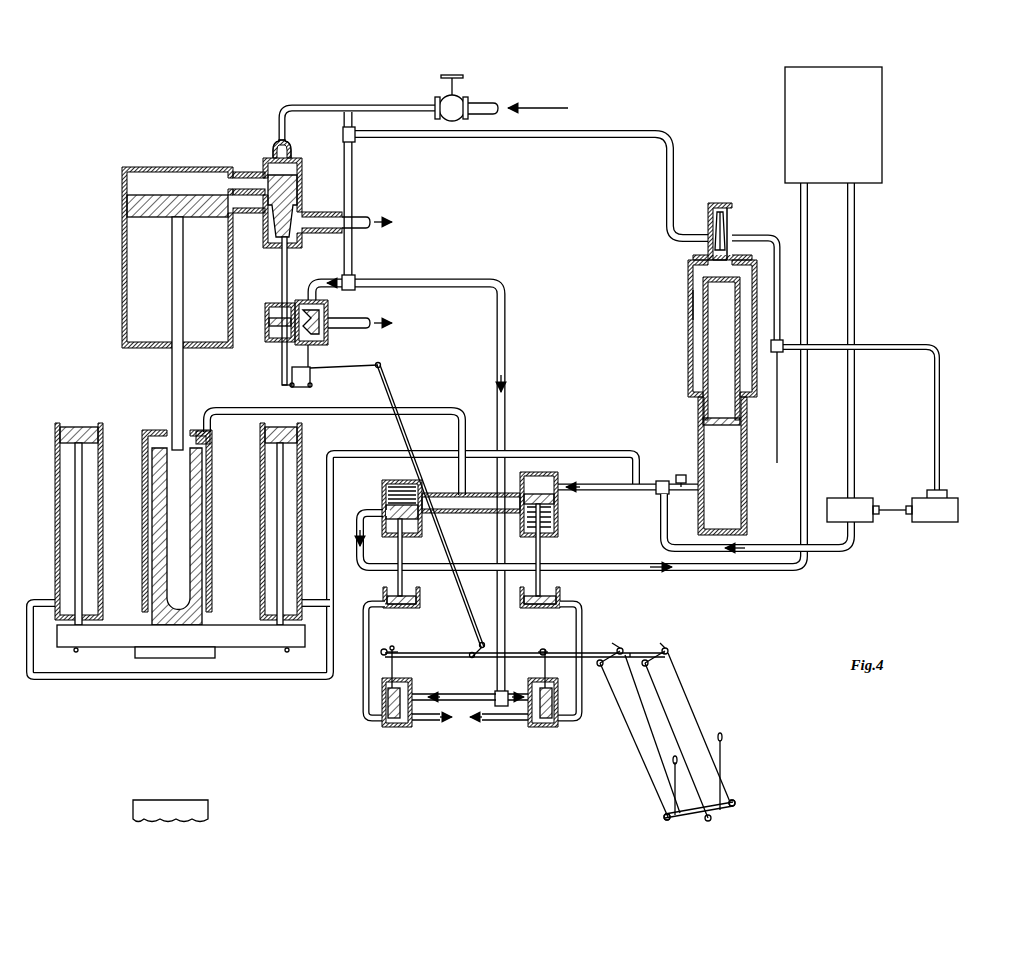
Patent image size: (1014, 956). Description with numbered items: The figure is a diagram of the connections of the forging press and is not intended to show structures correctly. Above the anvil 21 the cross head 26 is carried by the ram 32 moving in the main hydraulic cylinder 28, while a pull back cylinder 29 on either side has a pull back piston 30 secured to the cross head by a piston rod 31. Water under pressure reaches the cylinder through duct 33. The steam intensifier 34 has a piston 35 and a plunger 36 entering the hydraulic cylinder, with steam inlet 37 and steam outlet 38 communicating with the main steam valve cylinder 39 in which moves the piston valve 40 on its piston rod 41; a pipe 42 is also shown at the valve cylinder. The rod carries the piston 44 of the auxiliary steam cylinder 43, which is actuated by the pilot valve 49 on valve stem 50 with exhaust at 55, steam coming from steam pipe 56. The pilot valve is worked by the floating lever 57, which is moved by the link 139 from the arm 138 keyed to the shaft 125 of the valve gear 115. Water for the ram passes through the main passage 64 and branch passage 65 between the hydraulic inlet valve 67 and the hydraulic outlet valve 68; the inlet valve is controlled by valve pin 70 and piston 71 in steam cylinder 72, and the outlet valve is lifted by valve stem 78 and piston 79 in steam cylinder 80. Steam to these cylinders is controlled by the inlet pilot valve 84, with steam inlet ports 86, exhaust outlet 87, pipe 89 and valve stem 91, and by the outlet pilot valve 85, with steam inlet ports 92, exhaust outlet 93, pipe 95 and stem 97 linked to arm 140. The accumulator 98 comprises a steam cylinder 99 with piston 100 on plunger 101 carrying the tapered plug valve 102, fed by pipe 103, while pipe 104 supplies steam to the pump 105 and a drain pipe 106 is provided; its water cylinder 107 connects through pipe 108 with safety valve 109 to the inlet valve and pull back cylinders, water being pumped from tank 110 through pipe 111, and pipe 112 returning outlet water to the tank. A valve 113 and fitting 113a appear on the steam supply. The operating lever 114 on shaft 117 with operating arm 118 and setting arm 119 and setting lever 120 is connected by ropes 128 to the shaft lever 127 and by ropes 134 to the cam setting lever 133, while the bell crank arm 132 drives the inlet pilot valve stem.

The anvil 21 is at (170, 811).
The cross head 26 is at (181, 641).
The main hydraulic cylinder 28 is at (210, 511).
The pull back cylinder 29 is at (58, 508).
The pull back piston 30 is at (178, 427).
The piston rod 31 is at (75, 541).
The ram 32 is at (163, 556).
The duct 33 is at (204, 432).
The steam intensifier 34 is at (122, 272).
The piston 35 is at (177, 206).
The piston rod or plunger 36 is at (172, 376).
The steam inlet 37 is at (247, 178).
The steam outlet 38 is at (248, 200).
The main steam valve cylinder 39 is at (302, 188).
The piston valve 40 is at (282, 206).
The piston rod 41 is at (282, 265).
The outlet pipe 42 is at (347, 222).
The auxiliary steam cylinder 43 is at (268, 305).
The piston 44 is at (268, 322).
The pilot valve 49 is at (328, 311).
The valve stem 50 is at (310, 378).
The exhaust 55 is at (370, 328).
The steam pipe 56 is at (353, 249).
The floating lever 57 is at (345, 357).
The main passage 64 is at (476, 510).
The branch passage 65 is at (462, 468).
The hydraulic inlet valve 67 is at (539, 504).
The hydraulic outlet valve 68 is at (384, 504).
The valve pin 70 is at (541, 553).
The piston 71 is at (556, 595).
The steam cylinder 72 is at (562, 606).
The valve stem or pin 78 is at (403, 553).
The piston 79 is at (391, 592).
The steam cylinder 80 is at (421, 599).
The inlet pilot valve 84 is at (543, 713).
The outlet pilot valve 85 is at (397, 713).
The steam inlet ports 86 is at (534, 690).
The exhaust outlet 87 is at (520, 722).
The pipe 89 is at (581, 626).
The valve stem 91 is at (547, 665).
The steam inlet ports 92 is at (408, 692).
The exhaust outlet 93 is at (431, 722).
The pipe 95 is at (363, 692).
The stem 97 is at (394, 662).
The accumulator 98 is at (712, 328).
The steam cylinder 99 is at (690, 303).
The piston 100 is at (690, 276).
The plunger 101 is at (703, 377).
The tapered plug valve 102 is at (725, 249).
The pipe 103 is at (480, 136).
The pipe 104 is at (781, 305).
The pump 105 is at (892, 501).
The drain pipe 106 is at (776, 460).
The water cylinder 107 is at (700, 449).
The pipe 108 is at (686, 491).
The safety valve 109 is at (680, 475).
The tank 110 is at (833, 125).
The pipe 111 is at (853, 250).
The pipe 112 is at (805, 241).
The valve 113 is at (501, 97).
The fitting 113a is at (280, 143).
The operating lever 114 is at (724, 757).
The valve gear 115 is at (636, 648).
The shaft 117 is at (696, 820).
The operating arm 118 is at (738, 808).
The setting arm 119 is at (661, 817).
The setting lever 120 is at (672, 791).
The shaft 125 is at (525, 666).
The shaft lever 127 is at (660, 638).
The ropes or chains 128 is at (684, 704).
The bell crank arm 132 is at (541, 642).
The cam setting lever 133 is at (607, 640).
The ropes 134 is at (650, 726).
The arm 138 is at (470, 660).
The link 139 is at (384, 380).
The arm 140 is at (395, 641).